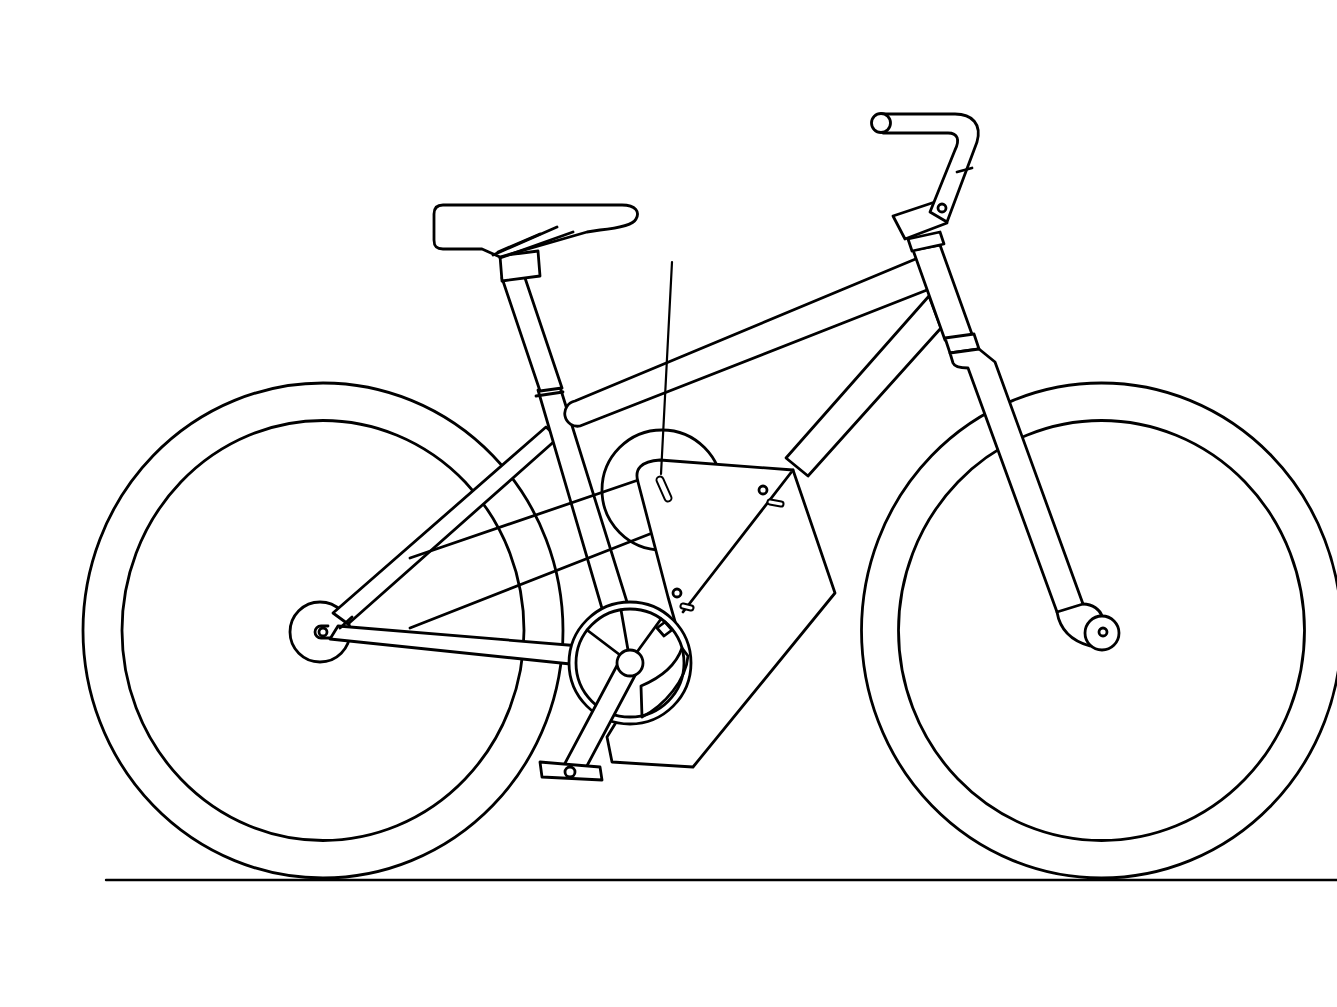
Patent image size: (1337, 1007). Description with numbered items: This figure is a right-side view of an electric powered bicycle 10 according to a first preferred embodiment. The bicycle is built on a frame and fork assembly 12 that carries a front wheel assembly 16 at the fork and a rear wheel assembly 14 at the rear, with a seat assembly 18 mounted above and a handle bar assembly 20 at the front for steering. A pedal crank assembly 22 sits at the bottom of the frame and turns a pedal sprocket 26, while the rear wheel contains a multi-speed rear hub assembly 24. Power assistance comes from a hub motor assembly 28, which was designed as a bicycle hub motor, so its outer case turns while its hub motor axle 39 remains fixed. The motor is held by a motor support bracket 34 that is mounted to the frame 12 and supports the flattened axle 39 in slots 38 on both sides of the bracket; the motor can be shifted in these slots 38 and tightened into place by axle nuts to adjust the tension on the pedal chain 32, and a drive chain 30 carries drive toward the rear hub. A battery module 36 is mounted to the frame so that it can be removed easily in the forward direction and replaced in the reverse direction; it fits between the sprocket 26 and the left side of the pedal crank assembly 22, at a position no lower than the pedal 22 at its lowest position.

The electric powered bicycle 10 is at (750, 179).
The frame and fork assembly 12 is at (948, 285).
The rear wheel assembly 14 is at (298, 504).
The front wheel assembly 16 is at (1146, 509).
The seat assembly 18 is at (479, 237).
The handle bar assembly 20 is at (972, 140).
The pedal crank assembly 22 is at (598, 780).
The multi-speed rear hub assembly 24 is at (310, 650).
The pedal sprocket 26 is at (680, 703).
The hub motor assembly 28 is at (672, 442).
The drive chain 30 is at (503, 588).
The pedal chain 32 is at (693, 627).
The motor support bracket 34 is at (707, 547).
The battery module 36 is at (773, 601).
The slots 38 is at (676, 348).
The hub motor axle 39 is at (674, 487).